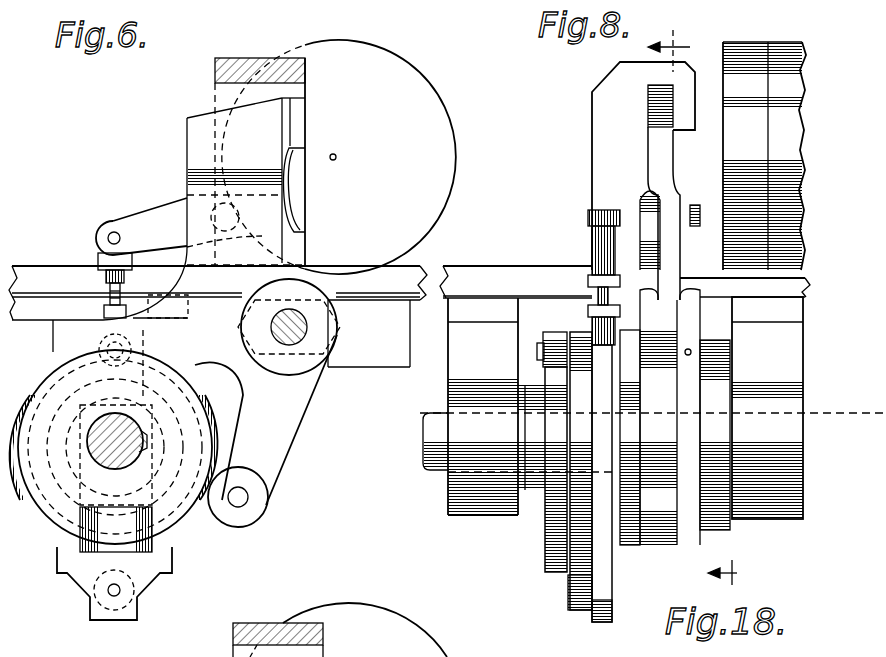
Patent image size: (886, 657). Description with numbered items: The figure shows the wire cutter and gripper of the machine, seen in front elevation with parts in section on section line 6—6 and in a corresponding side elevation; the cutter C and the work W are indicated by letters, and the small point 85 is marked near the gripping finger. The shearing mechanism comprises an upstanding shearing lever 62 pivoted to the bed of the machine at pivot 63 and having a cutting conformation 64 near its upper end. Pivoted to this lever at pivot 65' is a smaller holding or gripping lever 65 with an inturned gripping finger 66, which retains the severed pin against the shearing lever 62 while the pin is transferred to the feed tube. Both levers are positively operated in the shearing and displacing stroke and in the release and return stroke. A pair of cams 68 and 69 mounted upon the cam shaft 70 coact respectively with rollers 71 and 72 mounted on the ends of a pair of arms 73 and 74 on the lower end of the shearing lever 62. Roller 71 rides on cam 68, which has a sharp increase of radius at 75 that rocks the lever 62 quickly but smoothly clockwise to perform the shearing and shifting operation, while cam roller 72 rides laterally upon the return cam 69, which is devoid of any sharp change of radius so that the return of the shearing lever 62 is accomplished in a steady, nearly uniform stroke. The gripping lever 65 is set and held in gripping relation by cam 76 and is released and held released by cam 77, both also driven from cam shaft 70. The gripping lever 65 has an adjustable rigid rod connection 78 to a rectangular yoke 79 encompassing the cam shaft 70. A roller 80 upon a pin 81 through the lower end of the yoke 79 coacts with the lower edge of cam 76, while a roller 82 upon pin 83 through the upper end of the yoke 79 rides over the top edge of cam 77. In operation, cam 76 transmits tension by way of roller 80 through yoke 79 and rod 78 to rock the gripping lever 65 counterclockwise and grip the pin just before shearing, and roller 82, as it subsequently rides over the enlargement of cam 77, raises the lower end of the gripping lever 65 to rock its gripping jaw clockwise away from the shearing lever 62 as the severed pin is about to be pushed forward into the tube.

In FIG. 8, the section line 6— 6 is at (698, 315).
In FIG. 6, the cutter C is at (434, 86).
In FIG. 8, the cutter C is at (770, 38).
In FIG. 6, the work W is at (290, 147).
In FIG. 6, the shearing lever 62 is at (270, 248).
In FIG. 8, the shearing lever 62 is at (667, 164).
In FIG. 6, the pivot 63 is at (307, 328).
In FIG. 6, the cutting conformation 64 is at (292, 120).
In FIG. 6, the gripping lever 65 is at (141, 216).
In FIG. 8, the gripping lever 65 is at (629, 221).
In FIG. 6, the pivot 65' is at (210, 170).
In FIG. 8, the pivot 65' is at (725, 222).
In FIG. 6, the gripping finger 66 is at (300, 170).
In FIG. 6, the cam 68 is at (203, 545).
In FIG. 8, the cam 68 is at (668, 508).
In FIG. 6, the return cam 69 is at (202, 422).
In FIG. 8, the return cam 69 is at (718, 530).
In FIG. 6, the cam shaft 70 is at (123, 463).
In FIG. 8, the cam shaft 70 is at (432, 470).
In FIG. 6, the roller 71 is at (62, 338).
In FIG. 8, the roller 71 is at (705, 363).
In FIG. 6, the cam roller 72 is at (256, 513).
In FIG. 6, the arm 73 is at (167, 306).
In FIG. 6, the arm 74 is at (293, 422).
In FIG. 6, the sharp increase of radius 75 is at (214, 528).
In FIG. 6, the cam 76 is at (64, 562).
In FIG. 8, the cam 76 is at (565, 553).
In FIG. 6, the cam 77 is at (32, 522).
In FIG. 8, the cam 77 is at (553, 528).
In FIG. 6, the rod connection 78 is at (108, 292).
In FIG. 8, the rod connection 78 is at (596, 295).
In FIG. 6, the rectangular yoke 79 is at (161, 548).
In FIG. 8, the rectangular yoke 79 is at (608, 552).
In FIG. 6, the roller 80 is at (118, 612).
In FIG. 8, the roller 80 is at (572, 608).
In FIG. 8, the pin 81 is at (616, 594).
In FIG. 8, the roller 82 is at (552, 334).
In FIG. 6, the pin 83 is at (102, 313).
In FIG. 8, the pin 83 is at (535, 350).
In FIG. 6, the point 85 is at (337, 157).